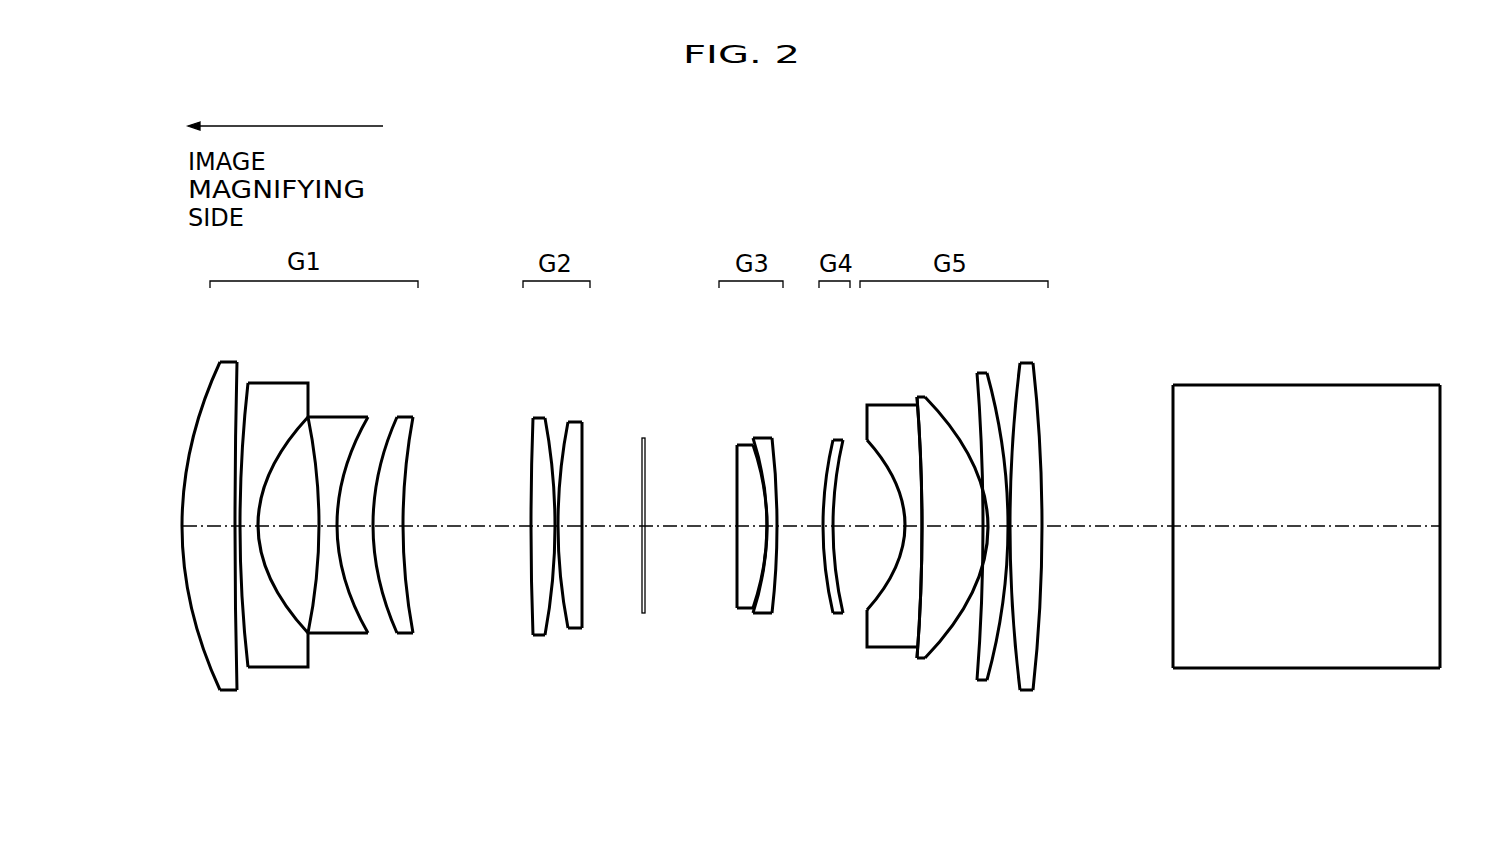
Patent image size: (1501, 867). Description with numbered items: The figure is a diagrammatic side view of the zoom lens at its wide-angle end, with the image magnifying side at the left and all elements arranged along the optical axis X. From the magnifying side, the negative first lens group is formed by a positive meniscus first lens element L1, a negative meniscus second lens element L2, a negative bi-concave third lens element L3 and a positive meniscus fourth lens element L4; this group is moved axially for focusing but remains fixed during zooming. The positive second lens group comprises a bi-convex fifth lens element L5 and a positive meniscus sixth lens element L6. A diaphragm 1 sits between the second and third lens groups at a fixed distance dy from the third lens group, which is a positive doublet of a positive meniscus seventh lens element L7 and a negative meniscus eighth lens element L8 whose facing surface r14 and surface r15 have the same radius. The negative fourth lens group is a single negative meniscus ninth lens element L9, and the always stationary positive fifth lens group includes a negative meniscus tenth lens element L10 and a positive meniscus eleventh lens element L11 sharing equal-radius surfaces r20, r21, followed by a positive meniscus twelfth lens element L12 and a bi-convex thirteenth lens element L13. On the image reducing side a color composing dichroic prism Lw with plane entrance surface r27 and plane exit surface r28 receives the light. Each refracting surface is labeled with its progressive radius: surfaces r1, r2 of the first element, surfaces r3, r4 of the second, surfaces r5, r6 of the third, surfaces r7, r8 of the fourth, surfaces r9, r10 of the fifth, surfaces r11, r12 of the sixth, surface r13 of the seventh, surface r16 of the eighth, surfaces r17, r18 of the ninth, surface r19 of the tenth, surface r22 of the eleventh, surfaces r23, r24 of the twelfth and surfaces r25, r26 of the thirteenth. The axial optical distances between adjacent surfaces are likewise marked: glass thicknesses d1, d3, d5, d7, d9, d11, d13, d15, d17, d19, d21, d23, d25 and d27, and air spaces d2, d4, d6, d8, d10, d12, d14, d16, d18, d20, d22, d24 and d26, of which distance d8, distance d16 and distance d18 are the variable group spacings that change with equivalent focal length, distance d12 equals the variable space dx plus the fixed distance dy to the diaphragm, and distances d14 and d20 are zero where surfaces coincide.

The first lens element L1 is at (215, 532).
The second lens element L2 is at (297, 500).
The third lens element L3 is at (352, 508).
The fourth lens element L4 is at (413, 508).
The fifth lens element L5 is at (538, 521).
The sixth lens element L6 is at (587, 521).
The seventh lens element L7 is at (731, 515).
The eighth lens element L8 is at (782, 489).
The ninth lens element L9 is at (825, 515).
The tenth lens element L10 is at (878, 518).
The eleventh lens element L11 is at (941, 498).
The twelfth lens element L12 is at (979, 523).
The thirteenth lens element L13 is at (1041, 523).
The color composing dichroic prism Lw is at (1310, 524).
The diaphragm 1 is at (647, 440).
The optical axis X is at (1412, 530).
The lens surface radius r1 is at (198, 412).
The lens surface radius r2 is at (238, 680).
The lens surface radius r3 is at (240, 388).
The lens surface radius r4 is at (313, 622).
The lens surface radius r5 is at (311, 447).
The lens surface radius r6 is at (370, 622).
The lens surface radius r7 is at (385, 420).
The lens surface radius r8 is at (413, 618).
The lens surface radius r9 is at (535, 620).
The lens surface radius r10 is at (550, 617).
The lens surface radius r11 is at (562, 442).
The lens surface radius r12 is at (583, 613).
The lens surface radius r13 is at (737, 457).
The lens surface radius r14 is at (755, 610).
The lens surface radius r15 is at (760, 525).
The lens surface radius r16 is at (777, 453).
The lens surface radius r17 is at (825, 612).
The lens surface radius r18 is at (817, 390).
The lens surface radius r19 is at (867, 610).
The lens surface radius r20 is at (917, 645).
The lens surface radius r21 is at (919, 527).
The lens surface radius r22 is at (945, 410).
The lens surface radius r23 is at (977, 667).
The lens surface radius r24 is at (995, 393).
The lens surface radius r25 is at (1017, 663).
The lens surface radius r26 is at (1043, 663).
The lens surface radius r27 is at (1172, 658).
The lens surface radius r28 is at (1440, 658).
The axial optical distance d1 is at (202, 520).
The axial optical distance d2 is at (237, 532).
The axial optical distance d3 is at (258, 517).
The axial optical distance d4 is at (293, 533).
The axial optical distance d5 is at (343, 518).
The axial optical distance d6 is at (353, 536).
The axial optical distance d7 is at (407, 518).
The axial optical distance d8 is at (458, 538).
The axial optical distance d9 is at (538, 525).
The axial optical distance d10 is at (552, 528).
The axial optical distance d11 is at (570, 523).
The variable distance dx is at (607, 528).
The fixed distance dy is at (667, 525).
The axial optical distance d12 is at (693, 530).
The axial optical distance d13 is at (747, 530).
The axial optical distance d14 is at (755, 520).
The axial optical distance d15 is at (780, 523).
The axial optical distance d16 is at (807, 530).
The axial optical distance d17 is at (837, 523).
The axial optical distance d18 is at (853, 530).
The axial optical distance d19 is at (907, 526).
The axial optical distance d20 is at (923, 523).
The axial optical distance d21 is at (953, 530).
The axial optical distance d22 is at (1002, 517).
The axial optical distance d23 is at (1007, 537).
The axial optical distance d24 is at (1013, 523).
The axial optical distance d25 is at (1015, 529).
The axial optical distance d26 is at (1138, 523).
The axial optical distance d27 is at (1292, 523).